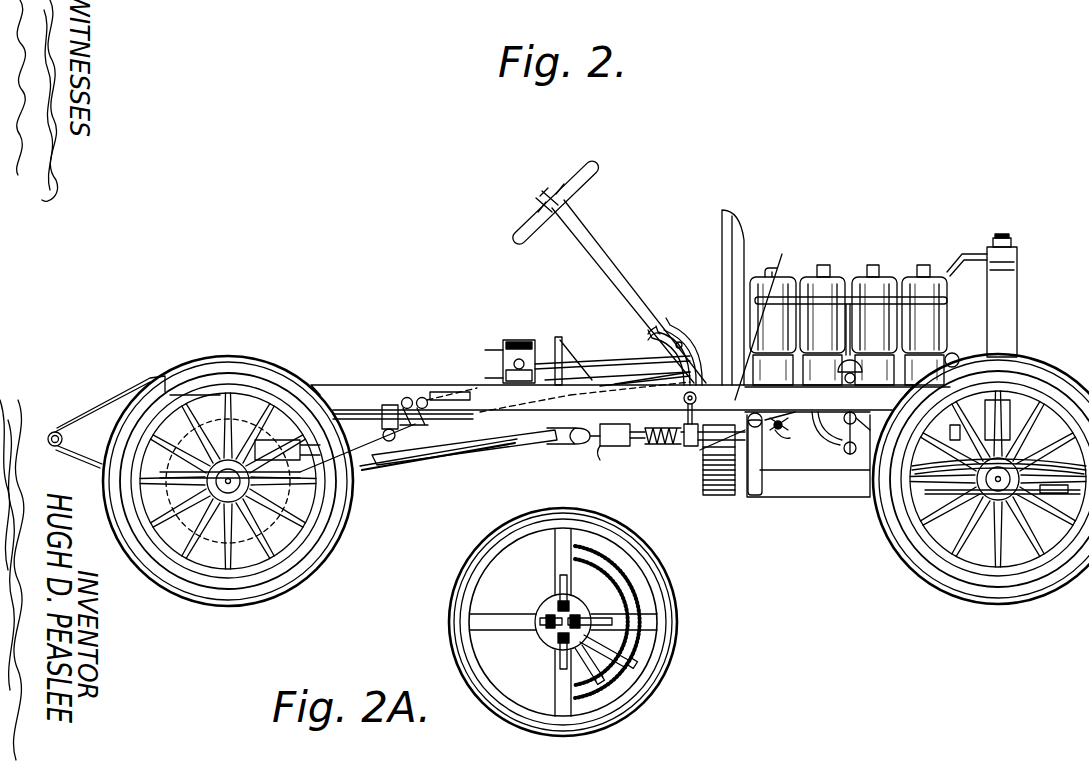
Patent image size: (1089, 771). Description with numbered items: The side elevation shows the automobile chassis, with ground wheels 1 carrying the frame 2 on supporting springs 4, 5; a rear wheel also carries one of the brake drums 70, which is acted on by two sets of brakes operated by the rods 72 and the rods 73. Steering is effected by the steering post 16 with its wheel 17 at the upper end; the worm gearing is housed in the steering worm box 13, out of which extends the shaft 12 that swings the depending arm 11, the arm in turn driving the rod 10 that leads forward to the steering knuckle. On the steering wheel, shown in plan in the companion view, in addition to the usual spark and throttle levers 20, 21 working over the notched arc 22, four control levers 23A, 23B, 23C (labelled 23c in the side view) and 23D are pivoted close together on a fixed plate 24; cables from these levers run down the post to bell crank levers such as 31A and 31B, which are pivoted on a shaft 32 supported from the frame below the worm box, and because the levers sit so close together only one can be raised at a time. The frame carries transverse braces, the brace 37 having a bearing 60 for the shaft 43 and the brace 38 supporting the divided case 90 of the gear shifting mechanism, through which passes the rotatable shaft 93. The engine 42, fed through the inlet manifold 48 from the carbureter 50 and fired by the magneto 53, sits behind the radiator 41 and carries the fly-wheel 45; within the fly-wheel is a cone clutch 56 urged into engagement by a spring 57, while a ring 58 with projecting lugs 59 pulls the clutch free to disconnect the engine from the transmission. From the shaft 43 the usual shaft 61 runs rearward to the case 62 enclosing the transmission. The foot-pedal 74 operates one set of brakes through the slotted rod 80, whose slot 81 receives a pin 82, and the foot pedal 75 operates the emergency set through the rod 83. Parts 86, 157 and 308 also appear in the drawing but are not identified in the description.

In FIG. 2, the ground wheels 1 is at (150, 576).
In FIG. 2, the frame 2 is at (362, 386).
In FIG. 2, the spring 4 is at (860, 455).
In FIG. 2, the spring 5 is at (92, 402).
In FIG. 2, the steering rod 10 is at (785, 497).
In FIG. 2, the arm 11 is at (750, 478).
In FIG. 2, the shaft 12 is at (700, 452).
In FIG. 2, the steering worm box 13 is at (775, 418).
In FIG. 2, the steering post 16 is at (610, 255).
In FIG. 2, the steering wheel 17 is at (598, 166).
In FIG. 2A, the steering wheel 17 is at (668, 579).
In FIG. 2A, the spark lever 20 is at (603, 679).
In FIG. 2A, the throttle lever 21 is at (636, 665).
In FIG. 2A, the notched arc 22 is at (655, 621).
In FIG. 2A, the control lever 23A is at (546, 626).
In FIG. 2A, the control lever 23B is at (561, 595).
In FIG. 2A, the control lever 23C is at (598, 618).
In FIG. 2A, the control lever 23D is at (562, 667).
In FIG. 2, the control lever 23c is at (553, 193).
In FIG. 2A, the fixed plate 24 is at (548, 634).
In FIG. 2, the bell crank lever 31A is at (791, 424).
In FIG. 2, the bell crank lever 31B is at (780, 442).
In FIG. 2, the shaft 32 is at (840, 428).
In FIG. 2, the transverse brace 37 is at (622, 396).
In FIG. 2, the transverse brace 38 is at (478, 386).
In FIG. 2, the radiator 41 is at (1017, 318).
In FIG. 2, the engine 42 is at (942, 335).
In FIG. 2, the shaft 43 is at (583, 446).
In FIG. 2, the fly-wheel 45 is at (719, 438).
In FIG. 2, the inlet manifold 48 is at (890, 292).
In FIG. 2, the carbureter 50 is at (846, 378).
In FIG. 2, the magneto 53 is at (955, 352).
In FIG. 2, the cone clutch 56 is at (704, 478).
In FIG. 2, the spring 57 is at (650, 444).
In FIG. 2, the ring 58 is at (760, 315).
In FIG. 2, the projecting lugs 59 is at (612, 368).
In FIG. 2, the bearing 60 is at (618, 446).
In FIG. 2, the shaft 61 is at (452, 455).
In FIG. 2, the transmission case 62 is at (272, 440).
In FIG. 2, the brake drum 70 is at (230, 504).
In FIG. 2, the brake rods 72 is at (403, 405).
In FIG. 2, the brake rods 73 is at (392, 446).
In FIG. 2, the foot-pedal 74 is at (650, 338).
In FIG. 2, the foot pedal 75 is at (665, 336).
In FIG. 2, the rod 80 is at (645, 374).
In FIG. 2, the slot 81 is at (688, 336).
In FIG. 2, the pin 82 is at (690, 385).
In FIG. 2, the rod 83 is at (652, 373).
In FIG. 2, the collar 86 is at (713, 423).
In FIG. 2, the gear shifting case 90 is at (503, 359).
In FIG. 2, the shaft 93 is at (517, 359).
In FIG. 2, the post 157 is at (583, 361).
In FIG. 2, the spring 308 is at (665, 447).